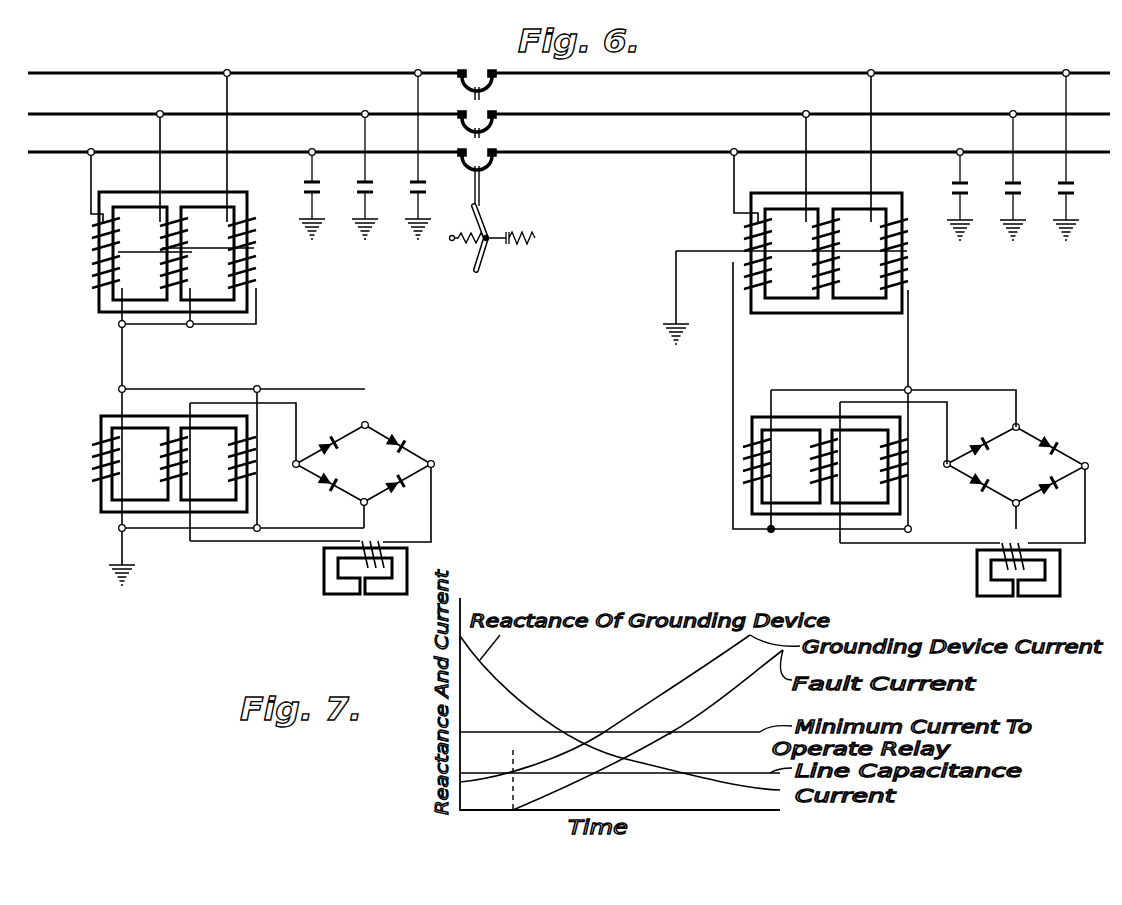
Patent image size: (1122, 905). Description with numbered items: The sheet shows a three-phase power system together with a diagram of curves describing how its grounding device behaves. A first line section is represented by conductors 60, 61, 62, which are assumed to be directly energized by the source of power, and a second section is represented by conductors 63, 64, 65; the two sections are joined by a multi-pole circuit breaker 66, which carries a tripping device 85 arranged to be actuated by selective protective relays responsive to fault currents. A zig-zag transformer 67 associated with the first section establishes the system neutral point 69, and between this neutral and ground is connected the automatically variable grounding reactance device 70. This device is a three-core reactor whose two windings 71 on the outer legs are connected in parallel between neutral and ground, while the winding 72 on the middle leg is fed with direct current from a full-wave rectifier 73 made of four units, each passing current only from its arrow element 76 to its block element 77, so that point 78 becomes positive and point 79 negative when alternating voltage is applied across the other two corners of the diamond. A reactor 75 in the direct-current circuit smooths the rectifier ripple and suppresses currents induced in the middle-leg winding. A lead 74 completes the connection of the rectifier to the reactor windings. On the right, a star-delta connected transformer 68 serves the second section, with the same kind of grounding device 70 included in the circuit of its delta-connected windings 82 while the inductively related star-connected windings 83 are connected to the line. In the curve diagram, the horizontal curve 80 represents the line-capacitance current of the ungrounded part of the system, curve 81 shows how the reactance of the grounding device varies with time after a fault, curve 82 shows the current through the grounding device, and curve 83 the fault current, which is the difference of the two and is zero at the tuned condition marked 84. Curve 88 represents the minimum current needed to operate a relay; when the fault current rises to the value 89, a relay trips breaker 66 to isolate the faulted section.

In FIG. 6, the conductor 60 is at (300, 80).
In FIG. 6, the conductor 61 is at (300, 120).
In FIG. 6, the conductor 62 is at (294, 157).
In FIG. 6, the conductor 63 is at (616, 83).
In FIG. 6, the conductor 64 is at (616, 120).
In FIG. 6, the conductor 65 is at (614, 158).
In FIG. 6, the multi-pole circuit breaker 66 is at (486, 66).
In FIG. 6, the zig-zag transformer 67 is at (72, 260).
In FIG. 6, the star-delta connected transformer 68 is at (800, 207).
In FIG. 6, the neutral point 69 is at (118, 332).
In FIG. 6, the automatically variable grounding reactance device 70 is at (576, 429).
In FIG. 6, the winding 71 is at (92, 463).
In FIG. 6, the winding 72 is at (188, 478).
In FIG. 6, the full-wave rectifier 73 is at (377, 472).
In FIG. 6, the conductor 74 is at (170, 418).
In FIG. 6, the reactor 75 is at (324, 569).
In FIG. 6, the arrow element 76 is at (400, 438).
In FIG. 6, the block element 77 is at (405, 442).
In FIG. 6, the point 78 is at (435, 468).
In FIG. 6, the point 79 is at (614, 477).
In FIG. 7, the curve 80 is at (740, 772).
In FIG. 7, the curve 81 is at (512, 695).
In FIG. 6, the curve 82 is at (772, 280).
In FIG. 7, the curve 82 is at (662, 700).
In FIG. 6, the curve 83 is at (772, 240).
In FIG. 7, the curve 83 is at (702, 720).
In FIG. 7, the condition point 84 is at (512, 772).
In FIG. 6, the tripping device 85 is at (519, 218).
In FIG. 7, the curve 88 is at (670, 735).
In FIG. 7, the fault current value 89 is at (673, 743).